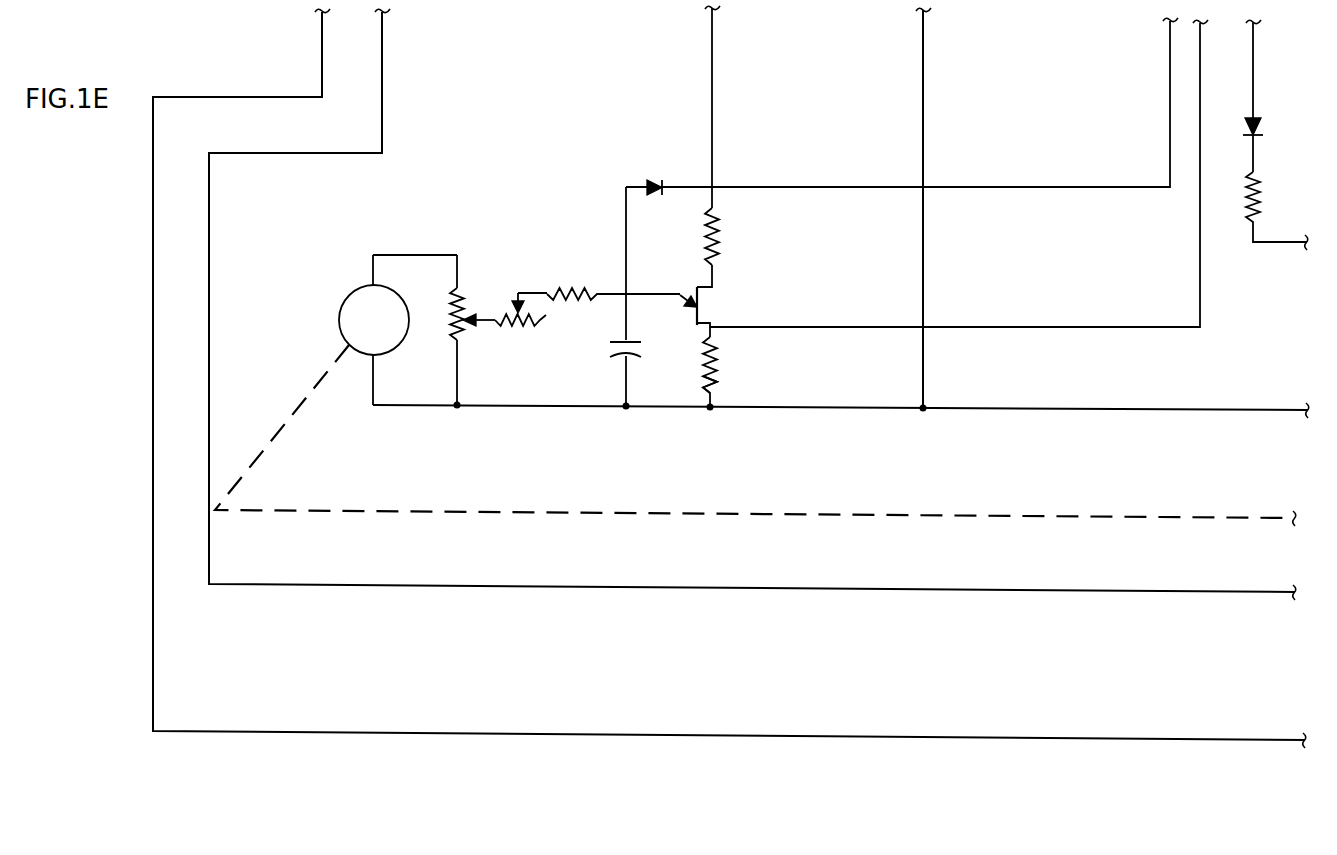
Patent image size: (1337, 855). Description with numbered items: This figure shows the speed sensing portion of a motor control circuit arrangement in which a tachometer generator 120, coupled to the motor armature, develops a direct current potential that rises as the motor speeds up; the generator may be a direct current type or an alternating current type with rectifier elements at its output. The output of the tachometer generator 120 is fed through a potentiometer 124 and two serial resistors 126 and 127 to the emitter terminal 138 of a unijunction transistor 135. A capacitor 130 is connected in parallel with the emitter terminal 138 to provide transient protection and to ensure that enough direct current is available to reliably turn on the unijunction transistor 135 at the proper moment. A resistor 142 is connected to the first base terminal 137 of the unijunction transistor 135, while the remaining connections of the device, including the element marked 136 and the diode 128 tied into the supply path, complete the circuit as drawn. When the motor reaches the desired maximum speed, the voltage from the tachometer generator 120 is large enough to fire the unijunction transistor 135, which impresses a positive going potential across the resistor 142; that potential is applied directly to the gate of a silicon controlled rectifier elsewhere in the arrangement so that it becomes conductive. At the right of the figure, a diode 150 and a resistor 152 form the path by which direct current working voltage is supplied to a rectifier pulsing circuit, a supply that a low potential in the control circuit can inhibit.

The tachometer generator 120 is at (338, 311).
The potentiometer 124 is at (461, 303).
The serial resistor 126 is at (539, 325).
The serial resistor 127 is at (572, 290).
The diode 128 is at (655, 180).
The capacitor 130 is at (620, 354).
The unijunction transistor 135 is at (860, 297).
The resistor 136 is at (713, 277).
The base-1 terminal 137 is at (712, 338).
The emitter terminal 138 is at (678, 292).
The resistor 142 is at (713, 387).
The diode 150 is at (1256, 123).
The resistor 152 is at (1261, 203).